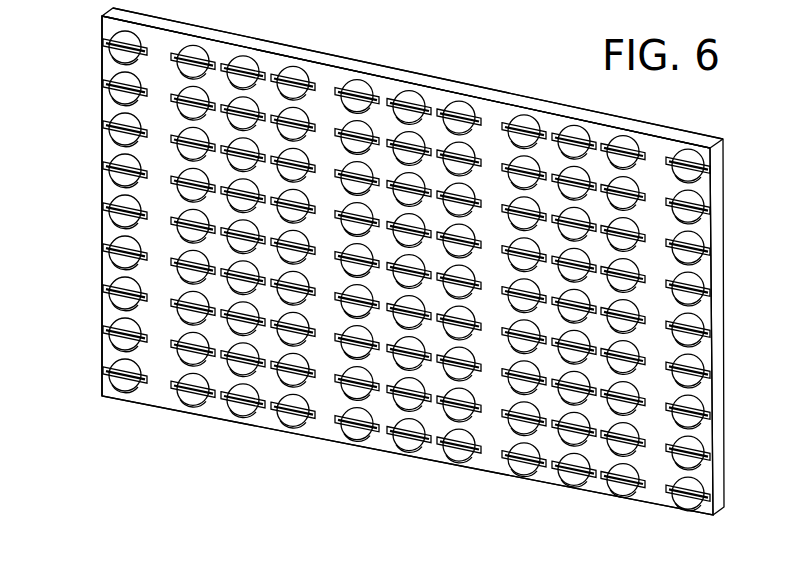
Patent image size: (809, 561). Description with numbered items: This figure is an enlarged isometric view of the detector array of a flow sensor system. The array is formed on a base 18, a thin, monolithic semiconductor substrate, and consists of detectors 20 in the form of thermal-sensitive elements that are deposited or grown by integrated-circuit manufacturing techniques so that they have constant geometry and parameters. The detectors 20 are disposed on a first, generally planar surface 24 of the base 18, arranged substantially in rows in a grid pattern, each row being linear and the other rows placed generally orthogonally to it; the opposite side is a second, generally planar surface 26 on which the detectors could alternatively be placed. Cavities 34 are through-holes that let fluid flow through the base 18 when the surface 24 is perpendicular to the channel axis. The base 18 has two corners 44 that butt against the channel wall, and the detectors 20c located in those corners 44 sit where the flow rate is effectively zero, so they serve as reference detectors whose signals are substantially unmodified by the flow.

The base 18 is at (100, 143).
The detectors 20 is at (300, 75).
The reference detectors 20c is at (112, 50).
The first generally planar surface 24 is at (342, 325).
The second generally planar surface 26 is at (483, 96).
The cavities 34 is at (114, 174).
The corners 44 is at (104, 14).